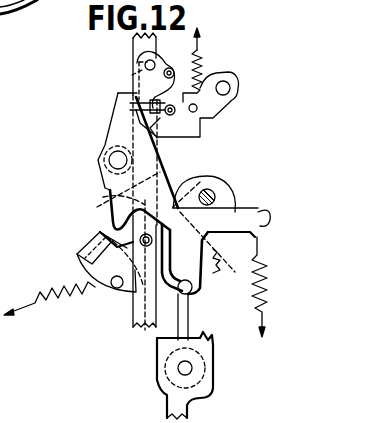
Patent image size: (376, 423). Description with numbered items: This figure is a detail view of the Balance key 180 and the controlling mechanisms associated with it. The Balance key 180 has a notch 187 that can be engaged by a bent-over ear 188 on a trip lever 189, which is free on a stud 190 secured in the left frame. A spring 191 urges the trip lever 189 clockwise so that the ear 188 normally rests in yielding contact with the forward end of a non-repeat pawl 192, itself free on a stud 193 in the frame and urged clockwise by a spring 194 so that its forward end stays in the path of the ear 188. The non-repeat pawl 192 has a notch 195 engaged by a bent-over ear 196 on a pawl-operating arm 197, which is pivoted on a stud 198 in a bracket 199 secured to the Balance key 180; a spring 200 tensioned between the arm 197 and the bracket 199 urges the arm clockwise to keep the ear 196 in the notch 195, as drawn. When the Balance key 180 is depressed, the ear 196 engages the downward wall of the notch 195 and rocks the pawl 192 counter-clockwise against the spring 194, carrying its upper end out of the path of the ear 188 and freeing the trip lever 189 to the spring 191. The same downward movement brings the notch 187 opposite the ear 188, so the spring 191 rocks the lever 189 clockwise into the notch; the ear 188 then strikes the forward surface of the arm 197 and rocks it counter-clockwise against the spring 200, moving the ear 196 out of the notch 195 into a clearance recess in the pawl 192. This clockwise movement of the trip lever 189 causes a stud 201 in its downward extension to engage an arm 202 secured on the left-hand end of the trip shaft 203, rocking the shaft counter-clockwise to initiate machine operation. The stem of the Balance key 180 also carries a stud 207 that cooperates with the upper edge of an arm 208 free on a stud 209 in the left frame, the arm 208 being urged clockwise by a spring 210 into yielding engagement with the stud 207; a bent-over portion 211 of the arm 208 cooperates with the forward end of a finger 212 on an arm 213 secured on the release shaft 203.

The Balance key 180 is at (140, 58).
The notch 187 is at (132, 75).
The bent-over ear 188 is at (118, 93).
The trip lever 189 is at (110, 128).
The stud 190 is at (106, 158).
The spring 191 is at (252, 298).
The non-repeat pawl 192 is at (226, 103).
The stud 193 is at (226, 87).
The spring 194 is at (198, 48).
The notch 195 is at (117, 109).
The bent-over ear 196 is at (200, 137).
The pawl-operating arm 197 is at (158, 62).
The stud 198 is at (141, 62).
The bracket 199 is at (163, 147).
The spring 200 is at (195, 76).
The stud 201 is at (193, 285).
The arm 202 is at (178, 320).
The trip shaft 203 is at (178, 370).
The stud 207 is at (117, 207).
The arm 208 is at (110, 283).
The stud 209 is at (216, 190).
The spring 210 is at (49, 308).
The bent-over portion 211 is at (90, 238).
The finger 212 is at (92, 277).
The arm 213 is at (213, 249).